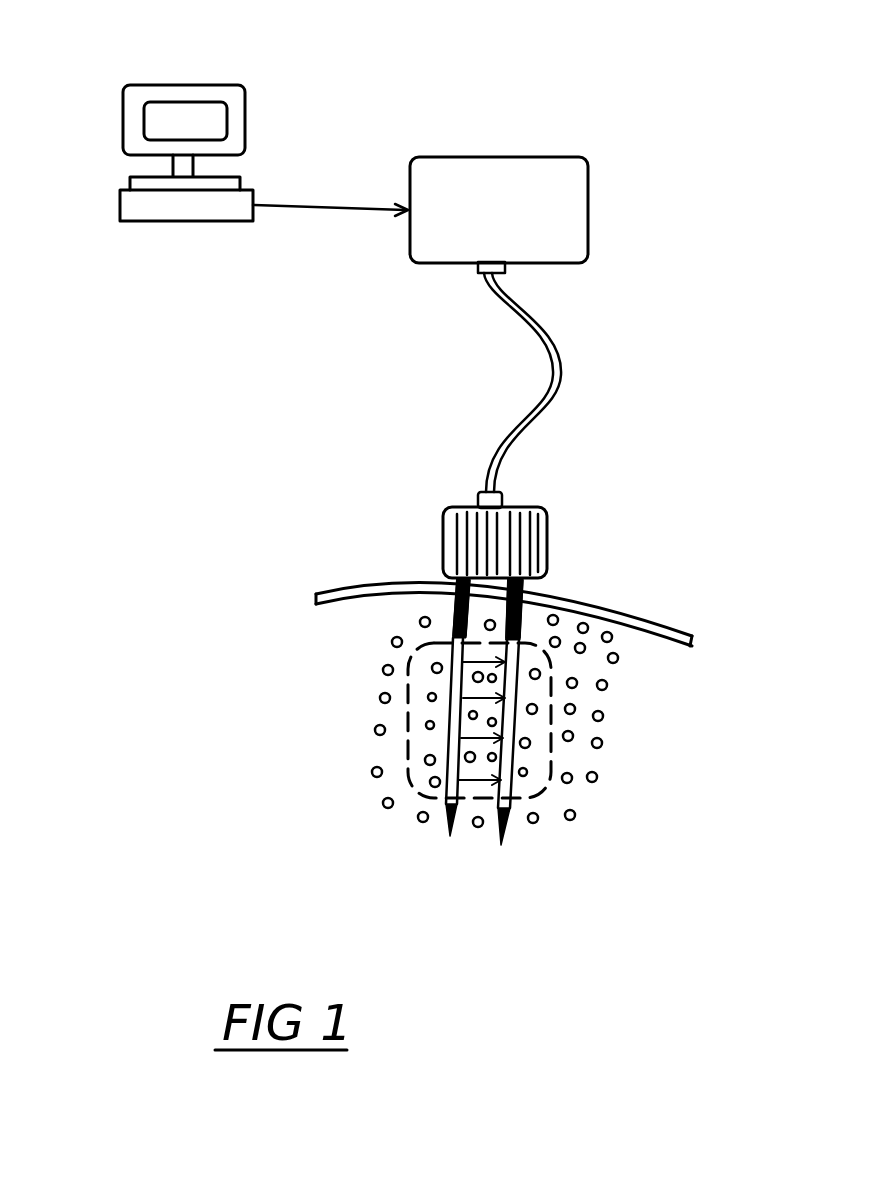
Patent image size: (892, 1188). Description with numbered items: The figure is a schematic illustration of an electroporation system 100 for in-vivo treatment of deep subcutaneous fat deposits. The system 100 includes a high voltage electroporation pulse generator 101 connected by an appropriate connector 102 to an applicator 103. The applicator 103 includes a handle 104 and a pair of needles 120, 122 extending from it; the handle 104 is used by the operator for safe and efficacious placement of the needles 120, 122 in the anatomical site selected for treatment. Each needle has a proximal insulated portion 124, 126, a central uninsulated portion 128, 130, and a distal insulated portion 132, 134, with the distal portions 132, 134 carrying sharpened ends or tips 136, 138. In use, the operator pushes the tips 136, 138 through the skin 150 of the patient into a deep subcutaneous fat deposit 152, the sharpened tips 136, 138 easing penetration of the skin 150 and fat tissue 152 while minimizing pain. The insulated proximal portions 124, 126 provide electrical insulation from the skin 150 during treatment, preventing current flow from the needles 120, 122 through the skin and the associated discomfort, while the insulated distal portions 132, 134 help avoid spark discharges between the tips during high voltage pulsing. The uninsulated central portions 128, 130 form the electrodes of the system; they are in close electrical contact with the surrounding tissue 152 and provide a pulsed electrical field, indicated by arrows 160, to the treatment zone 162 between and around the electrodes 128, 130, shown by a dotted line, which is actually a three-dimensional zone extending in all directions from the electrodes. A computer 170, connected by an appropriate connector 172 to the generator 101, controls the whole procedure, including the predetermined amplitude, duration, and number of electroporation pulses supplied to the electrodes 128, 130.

The electroporation system 100 is at (318, 96).
The high voltage electroporation pulse generator 101 is at (500, 157).
The connector 102 is at (559, 347).
The applicator 103 is at (406, 490).
The handle 104 is at (532, 507).
The needle 120 is at (457, 585).
The needle 122 is at (527, 632).
The proximal insulated portion 124 is at (447, 633).
The proximal insulated portion 126 is at (527, 589).
The central uninsulated portion 128 is at (447, 736).
The central uninsulated portion 130 is at (513, 728).
The distal insulated portion 132 is at (443, 815).
The distal insulated portion 134 is at (510, 826).
The sharpened tip 136 is at (448, 832).
The sharpened tip 138 is at (505, 835).
The skin 150 is at (647, 622).
The deep subcutaneous fat deposit 152 is at (593, 663).
The arrows 160 is at (475, 782).
The treatment zone 162 is at (537, 795).
The computer 170 is at (150, 86).
The connector 172 is at (323, 212).